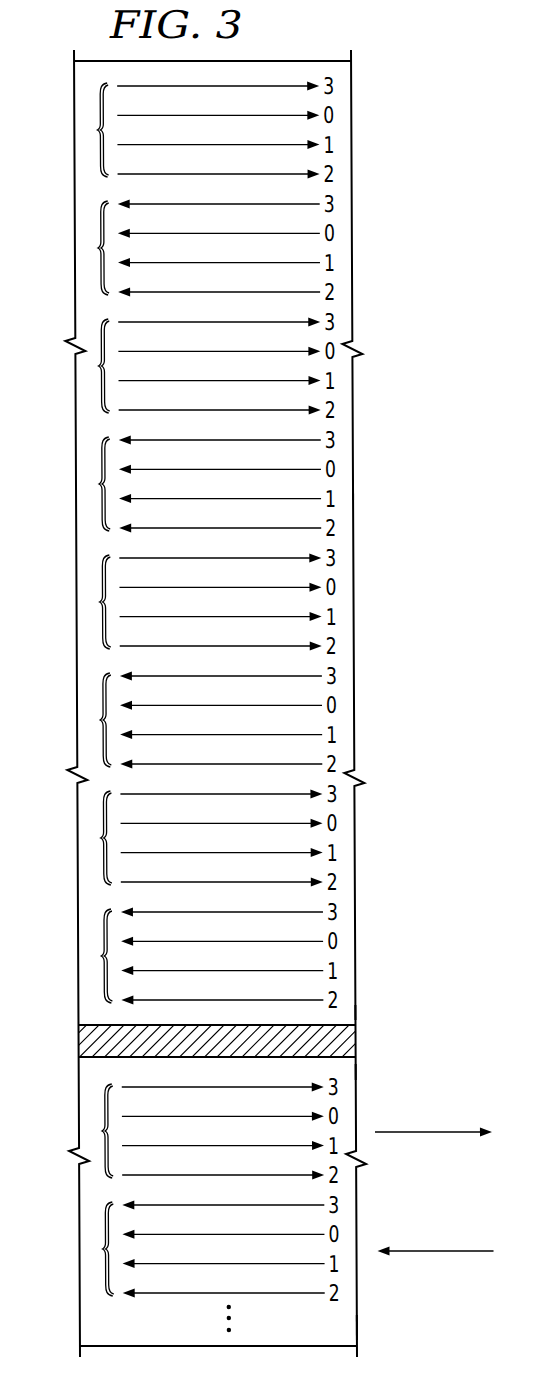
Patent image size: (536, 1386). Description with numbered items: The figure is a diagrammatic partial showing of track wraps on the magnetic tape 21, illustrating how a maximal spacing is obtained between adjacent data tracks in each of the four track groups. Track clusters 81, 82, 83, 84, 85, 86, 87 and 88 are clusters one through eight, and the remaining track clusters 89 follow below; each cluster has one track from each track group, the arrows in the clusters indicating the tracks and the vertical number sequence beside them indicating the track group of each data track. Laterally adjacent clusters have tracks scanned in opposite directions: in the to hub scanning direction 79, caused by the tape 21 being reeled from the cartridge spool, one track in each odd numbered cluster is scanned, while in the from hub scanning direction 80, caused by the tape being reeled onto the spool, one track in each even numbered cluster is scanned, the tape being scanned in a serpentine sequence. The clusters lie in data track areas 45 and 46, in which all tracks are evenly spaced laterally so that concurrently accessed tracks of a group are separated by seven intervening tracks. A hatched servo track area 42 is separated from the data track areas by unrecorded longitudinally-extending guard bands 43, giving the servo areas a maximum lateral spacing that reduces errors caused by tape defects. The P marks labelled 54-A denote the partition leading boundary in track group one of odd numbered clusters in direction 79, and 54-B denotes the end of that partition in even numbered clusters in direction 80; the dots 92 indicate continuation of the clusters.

The magnetic tape 21 is at (288, 61).
The track cluster 1 81 is at (97, 130).
The track cluster 2 82 is at (97, 248).
The track cluster 3 83 is at (97, 366).
The track cluster 4 84 is at (97, 484).
The track cluster 5 85 is at (97, 602).
The track cluster 6 86 is at (97, 720).
The track cluster 7 87 is at (97, 838).
The track cluster 8 88 is at (97, 956).
The remaining track clusters 89 is at (97, 1131).
The partition leading boundary 54-A is at (220, 619).
The partition end boundary 54-B is at (221, 752).
The servo track area 42 is at (77, 1040).
The guard bands 43 is at (351, 1012).
The data track area 45 is at (351, 488).
The data track area 46 is at (351, 1325).
The to hub scanning direction 79 is at (456, 1134).
The from hub scanning direction 80 is at (456, 1253).
The continuation dots 92 is at (232, 1318).